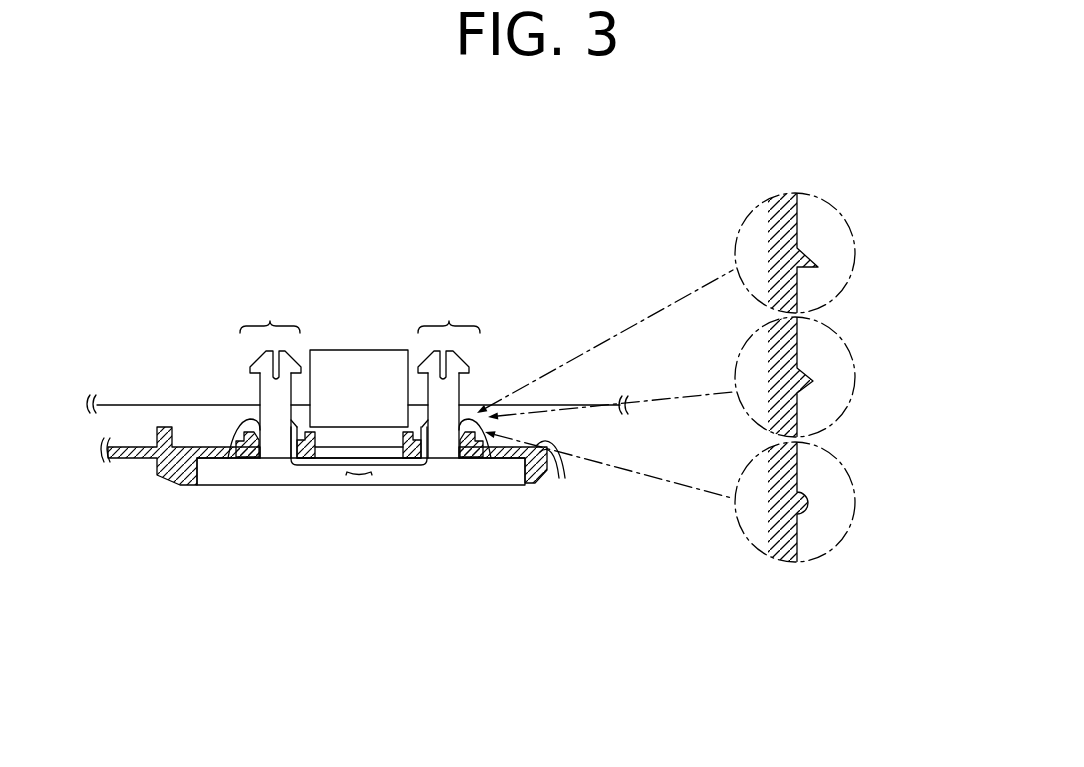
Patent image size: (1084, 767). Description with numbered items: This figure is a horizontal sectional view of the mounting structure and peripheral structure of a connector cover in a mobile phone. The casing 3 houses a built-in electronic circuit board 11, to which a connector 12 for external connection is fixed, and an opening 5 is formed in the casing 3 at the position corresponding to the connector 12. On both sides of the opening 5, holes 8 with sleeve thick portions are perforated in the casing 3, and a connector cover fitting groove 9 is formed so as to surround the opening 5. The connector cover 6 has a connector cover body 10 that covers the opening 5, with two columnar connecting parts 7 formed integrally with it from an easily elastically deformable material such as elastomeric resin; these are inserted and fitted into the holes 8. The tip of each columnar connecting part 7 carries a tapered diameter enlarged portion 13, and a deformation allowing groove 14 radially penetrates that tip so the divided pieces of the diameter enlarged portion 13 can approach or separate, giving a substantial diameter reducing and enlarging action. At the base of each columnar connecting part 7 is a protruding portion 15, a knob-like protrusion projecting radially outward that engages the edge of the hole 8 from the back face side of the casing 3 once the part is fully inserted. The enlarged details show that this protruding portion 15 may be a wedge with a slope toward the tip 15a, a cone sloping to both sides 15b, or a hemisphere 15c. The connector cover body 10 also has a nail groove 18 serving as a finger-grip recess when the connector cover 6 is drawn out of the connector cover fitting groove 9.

The casing 3 is at (130, 462).
The opening 5 is at (351, 453).
The connector cover 6 is at (279, 497).
The columnar connecting part 7 is at (358, 371).
The hole 8 is at (262, 442).
The connector cover fitting groove 9 is at (522, 465).
The connector cover body 10 is at (323, 476).
The electronic circuit board 11 is at (110, 403).
The connector 12 is at (362, 352).
The diameter enlarged portion 13 is at (360, 309).
The deformation allowing groove 14 is at (272, 358).
The protruding portion 15 is at (252, 424).
The wedge-shaped protruding portion 15a is at (808, 258).
The cone-shaped protruding portion 15b is at (808, 378).
The hemispherical protruding portion 15c is at (806, 498).
The nail groove 18 is at (362, 476).